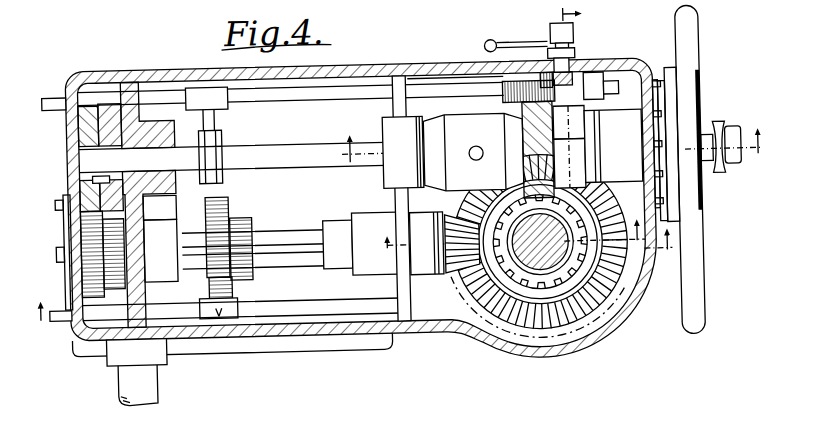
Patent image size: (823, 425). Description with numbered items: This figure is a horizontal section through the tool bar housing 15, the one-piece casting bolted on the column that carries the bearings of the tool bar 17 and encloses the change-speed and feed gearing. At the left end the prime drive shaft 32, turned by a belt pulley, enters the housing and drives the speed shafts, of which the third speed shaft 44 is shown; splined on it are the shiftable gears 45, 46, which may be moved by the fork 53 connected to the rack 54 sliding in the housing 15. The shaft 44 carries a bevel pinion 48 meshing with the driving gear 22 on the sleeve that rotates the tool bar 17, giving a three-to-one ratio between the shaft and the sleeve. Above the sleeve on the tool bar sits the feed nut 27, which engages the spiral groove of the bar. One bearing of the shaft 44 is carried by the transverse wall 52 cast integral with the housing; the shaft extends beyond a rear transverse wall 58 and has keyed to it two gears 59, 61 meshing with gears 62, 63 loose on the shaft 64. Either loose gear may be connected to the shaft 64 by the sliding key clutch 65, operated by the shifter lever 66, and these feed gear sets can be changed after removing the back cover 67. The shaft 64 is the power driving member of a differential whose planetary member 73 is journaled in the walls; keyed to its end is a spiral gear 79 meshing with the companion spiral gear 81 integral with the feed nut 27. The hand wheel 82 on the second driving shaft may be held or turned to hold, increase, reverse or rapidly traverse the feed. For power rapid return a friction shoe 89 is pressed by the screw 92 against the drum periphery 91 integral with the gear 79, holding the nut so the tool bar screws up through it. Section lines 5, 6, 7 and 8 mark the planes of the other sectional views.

The section line 5— 5 is at (355, 286).
The section line 6— 6 is at (509, 231).
The section line 7— 7 is at (548, 154).
The section line 8— 8 is at (564, 90).
The tool bar housing 15 is at (414, 335).
The tool bar 17 is at (506, 241).
The driving gear 22 is at (562, 342).
The feed nut 27 is at (595, 303).
The prime drive shaft 32 is at (145, 385).
The third speed shaft 44 is at (258, 240).
The gear 45 is at (238, 226).
The gear 46 is at (215, 209).
The bevel pinion 48 is at (437, 284).
The transverse wall 52 is at (395, 288).
The fork 53 is at (224, 306).
The rack 54 is at (299, 311).
The rear transverse wall 58 is at (138, 297).
The gear 59 is at (74, 228).
The gear 61 is at (87, 263).
The gear 62 is at (104, 109).
The gear 63 is at (84, 110).
The shaft 64 is at (253, 155).
The sliding key clutch 65 is at (89, 181).
The shifter lever 66 is at (491, 47).
The back cover 67 is at (65, 127).
The planetary member 73 is at (449, 136).
The spiral gear 79 is at (522, 136).
The spiral gear 81 is at (535, 271).
The hand wheel 82 is at (690, 293).
The friction shoe 89 is at (569, 134).
The drum periphery 91 is at (573, 164).
The screw 92 is at (573, 97).